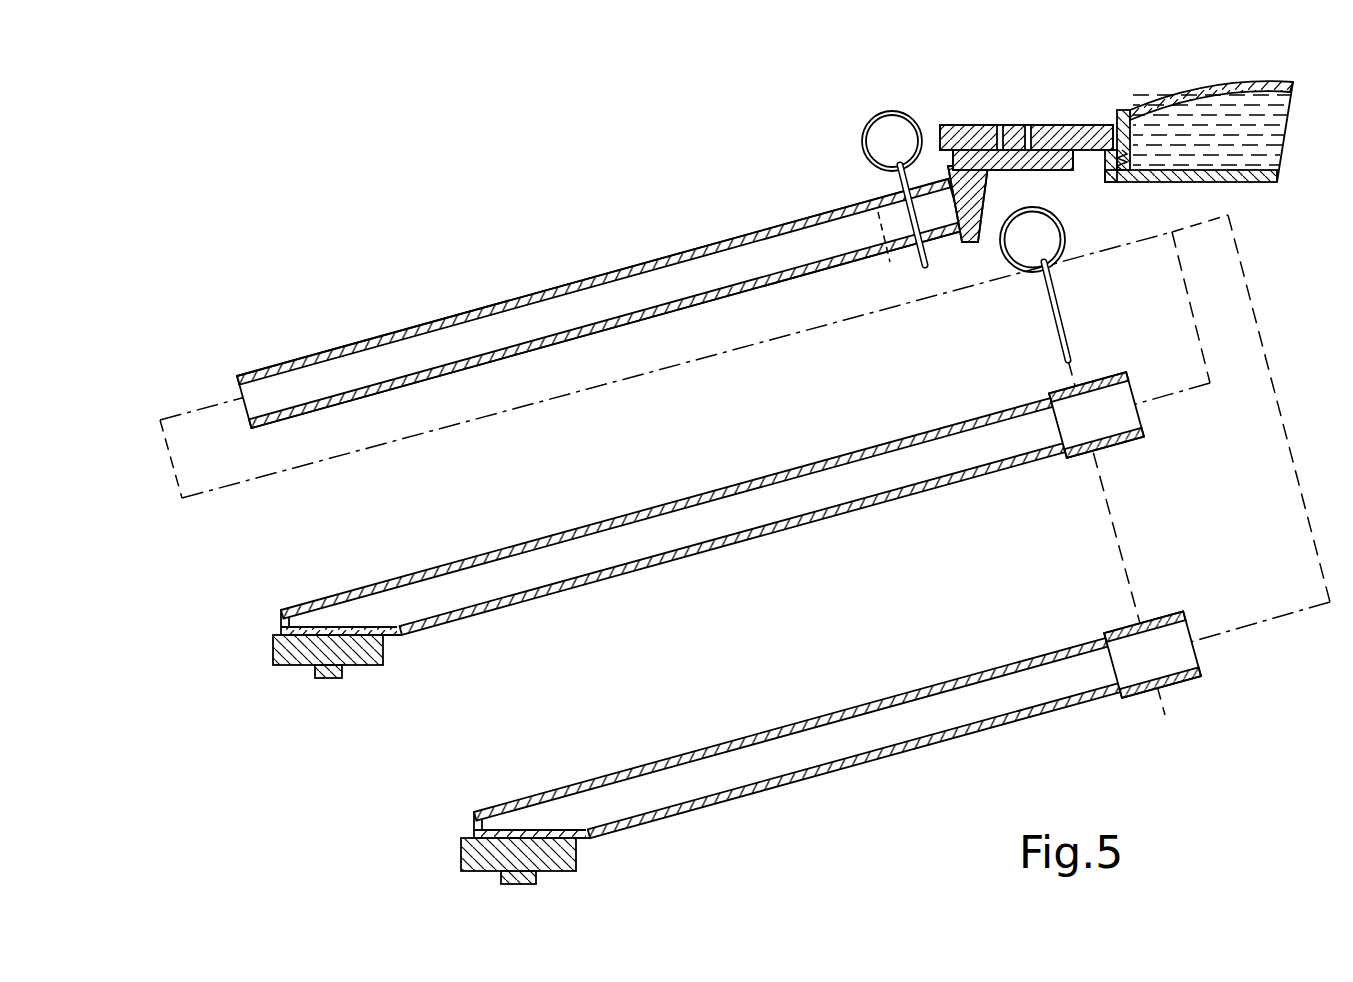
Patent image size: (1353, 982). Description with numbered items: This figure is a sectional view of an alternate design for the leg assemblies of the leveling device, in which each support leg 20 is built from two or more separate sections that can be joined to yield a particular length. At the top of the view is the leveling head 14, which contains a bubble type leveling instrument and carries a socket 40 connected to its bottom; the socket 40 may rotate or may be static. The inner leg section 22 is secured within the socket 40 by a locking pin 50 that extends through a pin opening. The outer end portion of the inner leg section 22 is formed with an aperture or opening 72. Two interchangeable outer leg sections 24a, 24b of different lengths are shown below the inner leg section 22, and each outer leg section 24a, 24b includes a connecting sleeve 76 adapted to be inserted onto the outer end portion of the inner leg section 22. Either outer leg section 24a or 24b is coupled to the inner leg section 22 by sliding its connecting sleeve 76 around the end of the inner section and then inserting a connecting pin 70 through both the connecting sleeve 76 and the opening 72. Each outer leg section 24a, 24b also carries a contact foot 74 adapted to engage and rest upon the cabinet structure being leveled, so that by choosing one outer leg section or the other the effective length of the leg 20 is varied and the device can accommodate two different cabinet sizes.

The leveling head 14 is at (1147, 87).
The support leg 20 is at (395, 227).
The inner leg section 22 is at (602, 312).
The aperture or opening 72 is at (275, 366).
The locking pin 50 is at (907, 222).
The socket 40 is at (1027, 187).
The connecting pin 70 is at (1050, 305).
The outer leg section 24a is at (619, 520).
The outer leg section 24b is at (720, 743).
The contact foot 74 is at (383, 660).
The connecting sleeve 76 is at (1120, 453).